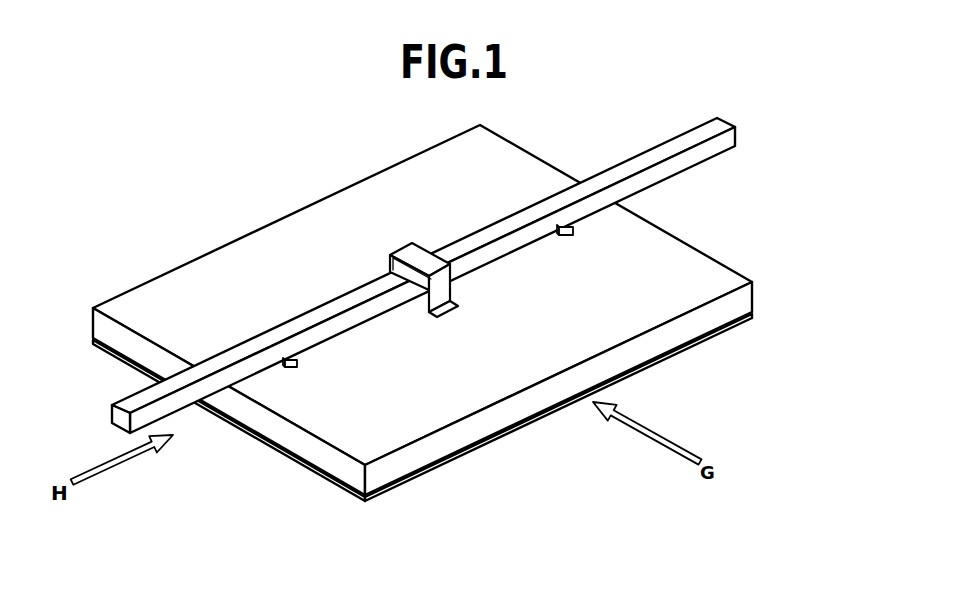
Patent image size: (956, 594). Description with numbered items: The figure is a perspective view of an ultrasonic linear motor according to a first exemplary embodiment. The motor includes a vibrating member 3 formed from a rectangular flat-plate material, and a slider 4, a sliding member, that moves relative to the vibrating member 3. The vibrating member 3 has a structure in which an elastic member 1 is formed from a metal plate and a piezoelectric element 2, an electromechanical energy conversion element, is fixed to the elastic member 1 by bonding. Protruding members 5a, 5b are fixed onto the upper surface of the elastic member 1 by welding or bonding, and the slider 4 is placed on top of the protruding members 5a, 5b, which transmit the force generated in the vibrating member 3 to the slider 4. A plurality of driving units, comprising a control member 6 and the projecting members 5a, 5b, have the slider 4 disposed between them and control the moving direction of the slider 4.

The elastic member 1 is at (720, 273).
The piezoelectric element 2 is at (733, 324).
The vibrating member 3 is at (468, 313).
The slider 4 is at (660, 153).
The protruding member 5a is at (292, 364).
The protruding member 5b is at (573, 234).
The control member 6 is at (445, 307).